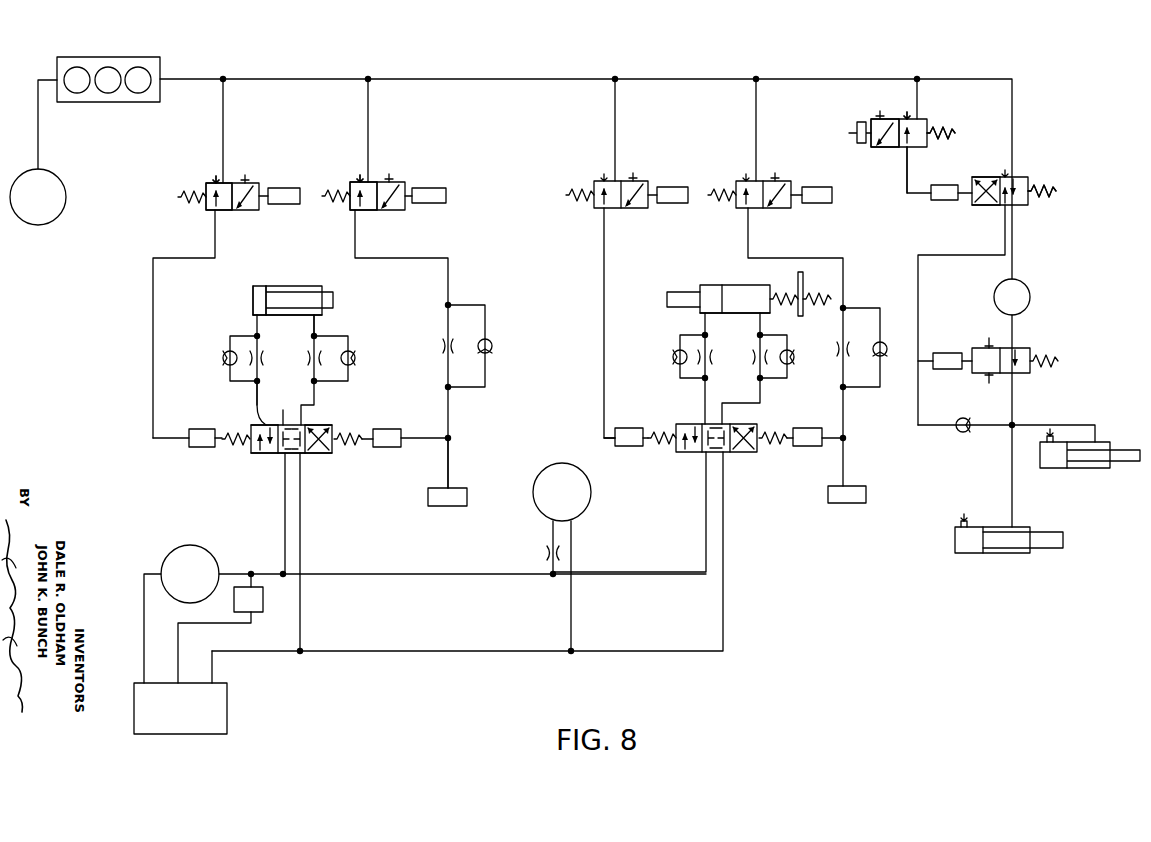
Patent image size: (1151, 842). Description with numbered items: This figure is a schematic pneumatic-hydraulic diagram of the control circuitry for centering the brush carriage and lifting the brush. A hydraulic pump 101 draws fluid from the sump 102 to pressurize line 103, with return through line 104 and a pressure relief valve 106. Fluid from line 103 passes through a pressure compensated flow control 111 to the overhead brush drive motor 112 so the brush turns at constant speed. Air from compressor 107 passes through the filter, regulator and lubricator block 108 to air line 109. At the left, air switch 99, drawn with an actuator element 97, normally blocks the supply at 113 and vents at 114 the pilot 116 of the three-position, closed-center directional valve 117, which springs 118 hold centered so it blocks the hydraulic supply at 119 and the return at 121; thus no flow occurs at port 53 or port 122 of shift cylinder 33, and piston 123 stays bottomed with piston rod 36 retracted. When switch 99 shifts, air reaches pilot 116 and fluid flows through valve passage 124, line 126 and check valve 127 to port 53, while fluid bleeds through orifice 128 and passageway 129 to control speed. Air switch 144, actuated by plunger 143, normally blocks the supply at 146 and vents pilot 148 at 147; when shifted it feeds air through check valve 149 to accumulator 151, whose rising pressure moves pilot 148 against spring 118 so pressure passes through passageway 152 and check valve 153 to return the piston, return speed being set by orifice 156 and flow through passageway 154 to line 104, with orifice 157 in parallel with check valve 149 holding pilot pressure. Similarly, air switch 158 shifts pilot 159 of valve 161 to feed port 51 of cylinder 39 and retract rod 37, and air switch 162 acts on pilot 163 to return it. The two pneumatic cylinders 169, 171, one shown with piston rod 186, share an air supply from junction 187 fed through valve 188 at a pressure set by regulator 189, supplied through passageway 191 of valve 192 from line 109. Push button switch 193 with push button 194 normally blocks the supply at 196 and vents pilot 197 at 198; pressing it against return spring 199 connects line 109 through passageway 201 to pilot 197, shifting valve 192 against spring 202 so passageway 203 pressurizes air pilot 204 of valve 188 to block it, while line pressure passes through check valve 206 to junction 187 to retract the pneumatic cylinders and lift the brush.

The cylinder 33 is at (302, 313).
The piston rod 36 is at (322, 292).
The piston rod 37 is at (668, 295).
The cylinder 39 is at (727, 313).
The port 51 is at (700, 313).
The port 53 is at (253, 320).
The solenoid 97 is at (288, 205).
The air switch 99 is at (228, 212).
The hydraulic pump 101 is at (215, 556).
The sump 102 is at (227, 708).
The line 103 is at (345, 574).
The return line 104 is at (410, 651).
The pressure relief valve 106 is at (258, 614).
The compressor 107 is at (62, 180).
The filter, regulator and lubricator block 108 is at (160, 57).
The air line 109 is at (790, 79).
The pressure compensated flow control 111 is at (545, 550).
The overhead brush drive motor 112 is at (590, 498).
The supply port 113 is at (228, 183).
The vent 114 is at (212, 182).
The pilot 116 is at (190, 450).
The directional valve 117 is at (240, 482).
The springs 118 is at (237, 445).
The hydraulic pressure supply port 119 is at (275, 453).
The return port 121 is at (300, 453).
The port 122 is at (316, 318).
The piston 123 is at (268, 296).
The valve passage 124 is at (262, 425).
The line 126 is at (256, 400).
The check valve 127 is at (222, 358).
The orifice 128 is at (320, 362).
The passageway 129 is at (283, 410).
The plunger 143 is at (446, 190).
The air switch 144 is at (368, 212).
The air supply port 146 is at (372, 182).
The vent 147 is at (352, 180).
The valve pilot 148 is at (400, 430).
The check valve 149 is at (492, 346).
The accumulator 151 is at (448, 506).
The valve passageway 152 is at (322, 425).
The check valve 153 is at (355, 358).
The valve passageway 154 is at (313, 453).
The orifice 156 is at (264, 358).
The orifice 157 is at (445, 340).
The air switch 158 is at (637, 181).
The pilot 159 is at (625, 447).
The valve 161 is at (740, 452).
The air switch 162 is at (783, 210).
The pilot 163 is at (805, 447).
The cylinder 169 is at (1000, 555).
The cylinder 171 is at (1085, 470).
The piston rod 186 is at (1058, 548).
The junction 187 is at (1016, 424).
The valve 188 is at (1028, 348).
The regulator 189 is at (1031, 295).
The passageway 191 is at (1028, 180).
The valve 192 is at (982, 175).
The push button switch 193 is at (903, 160).
The push button 194 is at (852, 133).
The supply port 196 is at (922, 120).
The pilot 197 is at (930, 200).
The vent 198 is at (904, 113).
The return spring 199 is at (953, 131).
The passageway 201 is at (889, 148).
The return spring 202 is at (1056, 192).
The passageway 203 is at (986, 206).
The air pilot 204 is at (935, 350).
The check valve 206 is at (965, 433).